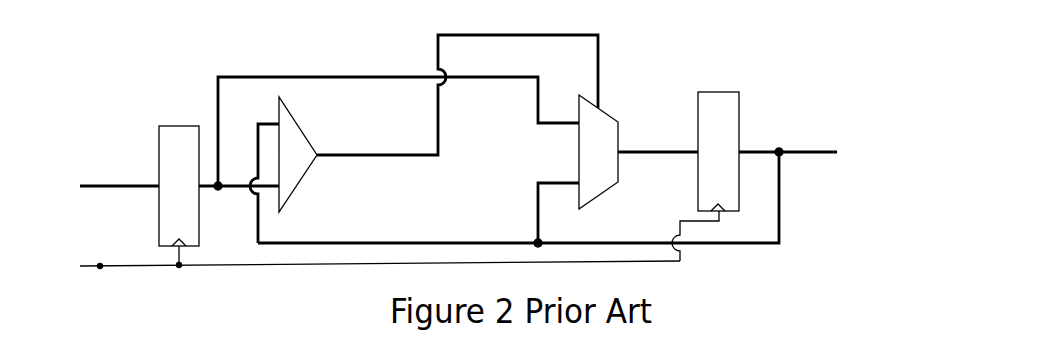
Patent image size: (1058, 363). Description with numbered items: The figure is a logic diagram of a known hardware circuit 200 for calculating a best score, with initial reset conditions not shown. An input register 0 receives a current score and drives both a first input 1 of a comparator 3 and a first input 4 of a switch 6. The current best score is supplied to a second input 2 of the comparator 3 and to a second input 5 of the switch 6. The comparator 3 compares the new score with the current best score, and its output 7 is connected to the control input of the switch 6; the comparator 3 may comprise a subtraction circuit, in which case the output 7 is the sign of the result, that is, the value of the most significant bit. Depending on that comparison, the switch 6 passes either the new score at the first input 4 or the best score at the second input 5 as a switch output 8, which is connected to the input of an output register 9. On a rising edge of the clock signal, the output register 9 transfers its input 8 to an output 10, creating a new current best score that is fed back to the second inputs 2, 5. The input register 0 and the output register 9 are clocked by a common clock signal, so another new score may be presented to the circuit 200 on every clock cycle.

The input register 0 is at (179, 186).
The first input of the comparator 1 is at (246, 178).
The second input of the comparator 2 is at (264, 172).
The comparator 3 is at (298, 154).
The first input of the switch 4 is at (398, 131).
The second input of the switch 5 is at (558, 202).
The switch 6 is at (598, 152).
The output of the comparator 7 is at (457, 95).
The switch output 8 is at (658, 143).
The output register 9 is at (718, 151).
The output of the output register 10 is at (788, 145).
The hardware circuit 200 is at (748, 37).